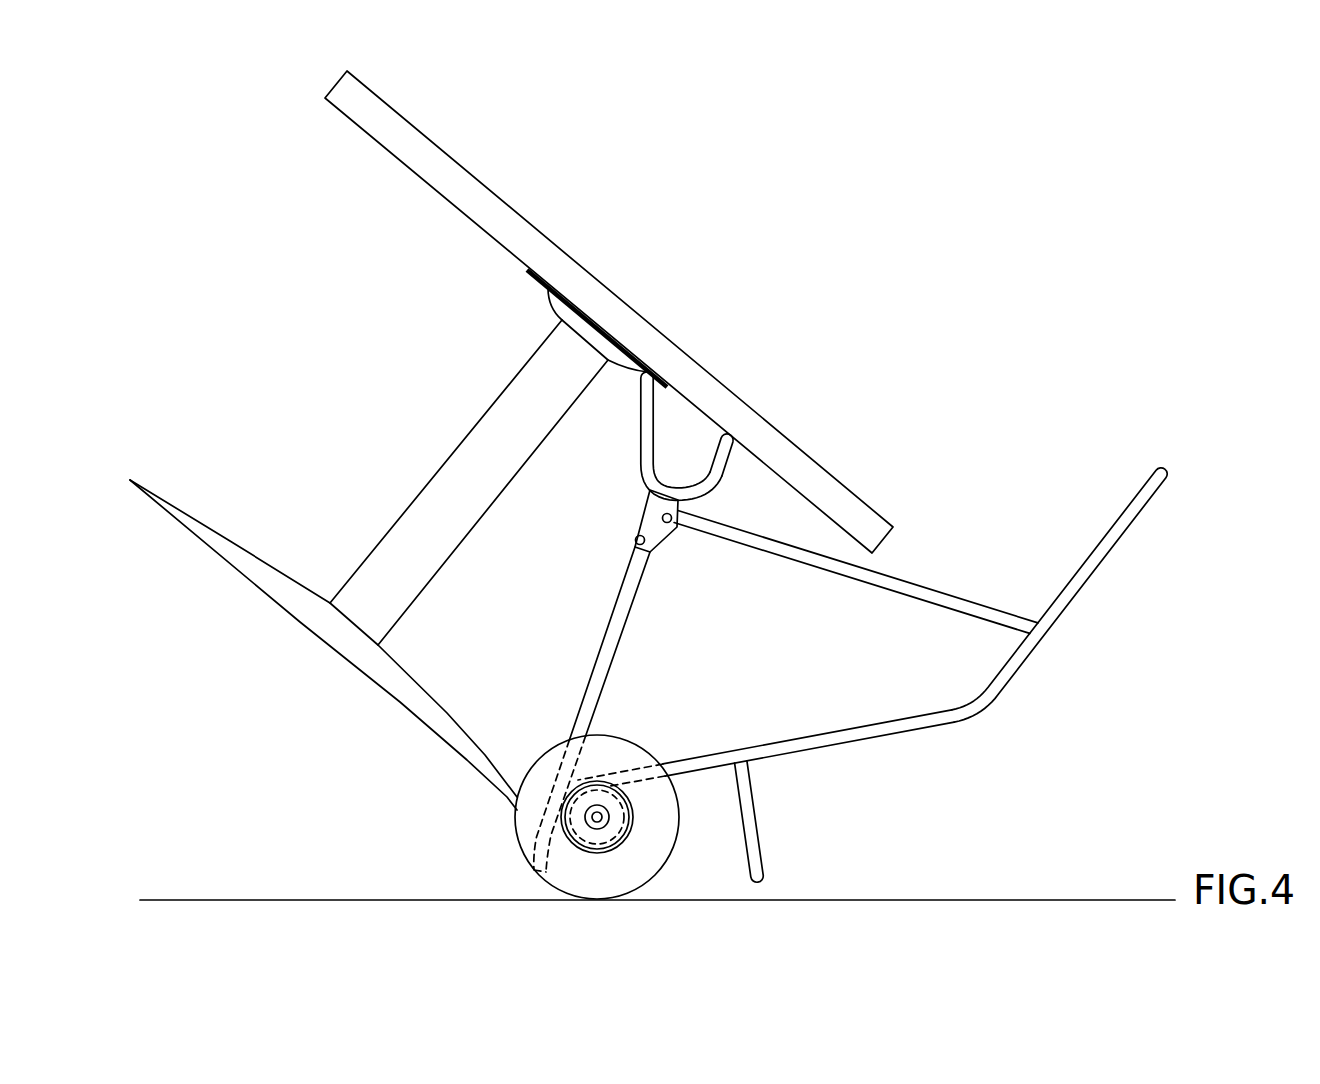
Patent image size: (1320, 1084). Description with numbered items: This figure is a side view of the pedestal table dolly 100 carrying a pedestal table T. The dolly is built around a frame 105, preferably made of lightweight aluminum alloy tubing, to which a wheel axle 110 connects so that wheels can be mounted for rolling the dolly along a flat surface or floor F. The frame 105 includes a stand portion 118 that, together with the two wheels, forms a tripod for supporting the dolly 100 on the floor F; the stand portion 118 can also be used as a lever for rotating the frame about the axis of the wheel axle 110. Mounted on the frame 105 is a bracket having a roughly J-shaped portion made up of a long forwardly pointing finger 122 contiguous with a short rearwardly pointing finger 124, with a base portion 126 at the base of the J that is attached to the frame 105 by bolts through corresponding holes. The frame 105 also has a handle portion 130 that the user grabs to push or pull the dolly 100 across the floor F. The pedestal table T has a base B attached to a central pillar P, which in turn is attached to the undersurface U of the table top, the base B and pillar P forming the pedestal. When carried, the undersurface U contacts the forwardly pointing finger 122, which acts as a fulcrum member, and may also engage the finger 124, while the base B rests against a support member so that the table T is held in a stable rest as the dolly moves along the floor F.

The pedestal table dolly 100 is at (966, 548).
The frame 105 is at (915, 722).
The wheel axle 110 is at (597, 805).
The stand portion 118 is at (756, 825).
The forwardly pointing finger 122 is at (640, 410).
The rearwardly pointing finger 124 is at (728, 458).
The base portion 126 is at (647, 517).
The handle portion 130 is at (1122, 517).
The undersurface U is at (400, 162).
The pedestal table T is at (712, 340).
The central pillar P is at (437, 490).
The base B is at (235, 545).
The floor F is at (993, 900).